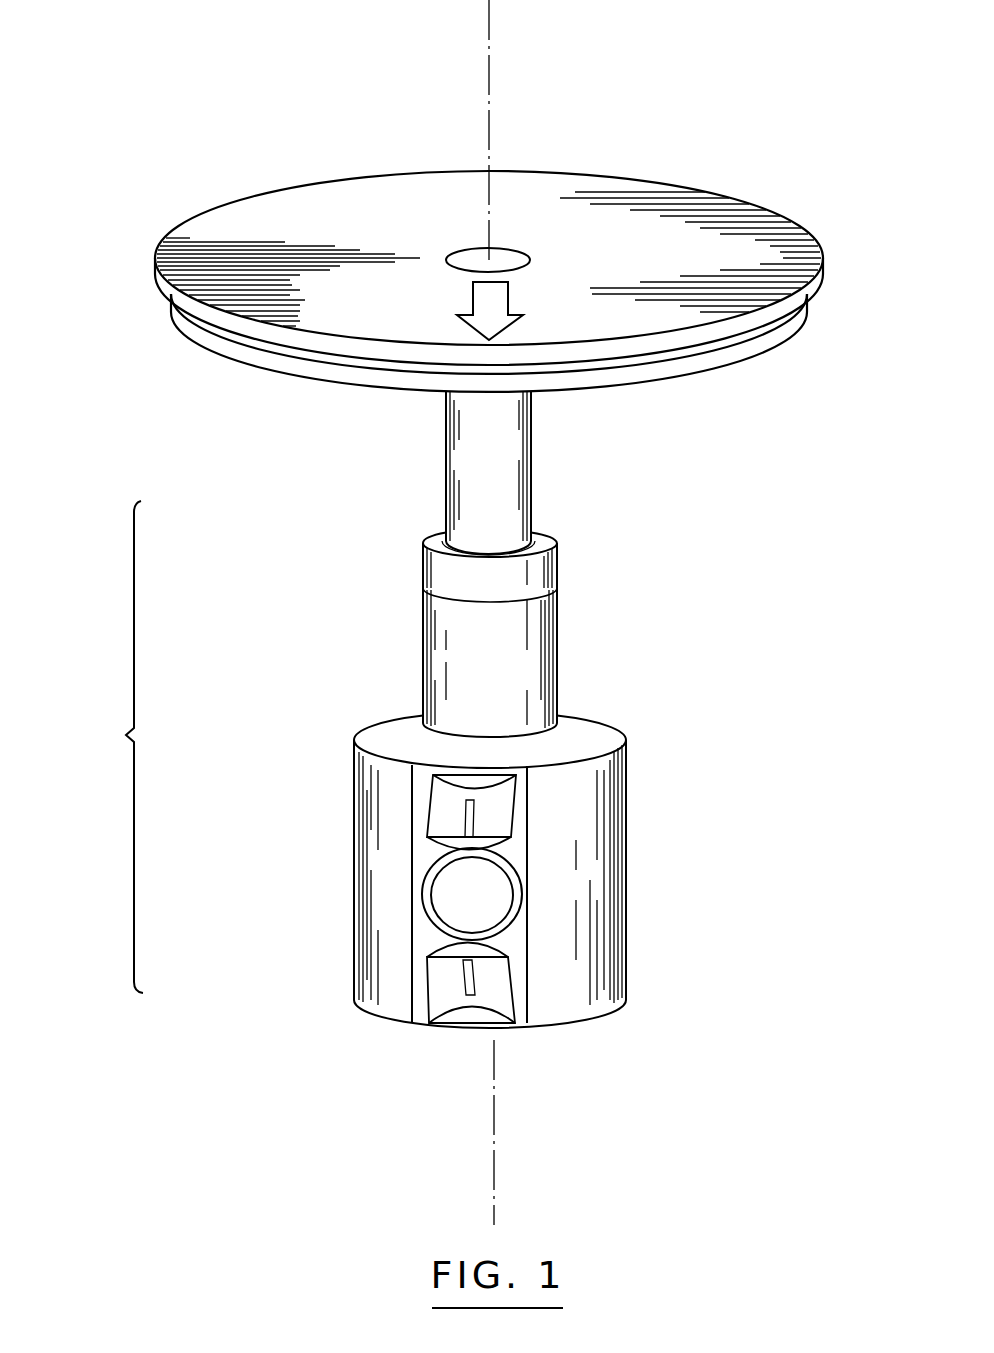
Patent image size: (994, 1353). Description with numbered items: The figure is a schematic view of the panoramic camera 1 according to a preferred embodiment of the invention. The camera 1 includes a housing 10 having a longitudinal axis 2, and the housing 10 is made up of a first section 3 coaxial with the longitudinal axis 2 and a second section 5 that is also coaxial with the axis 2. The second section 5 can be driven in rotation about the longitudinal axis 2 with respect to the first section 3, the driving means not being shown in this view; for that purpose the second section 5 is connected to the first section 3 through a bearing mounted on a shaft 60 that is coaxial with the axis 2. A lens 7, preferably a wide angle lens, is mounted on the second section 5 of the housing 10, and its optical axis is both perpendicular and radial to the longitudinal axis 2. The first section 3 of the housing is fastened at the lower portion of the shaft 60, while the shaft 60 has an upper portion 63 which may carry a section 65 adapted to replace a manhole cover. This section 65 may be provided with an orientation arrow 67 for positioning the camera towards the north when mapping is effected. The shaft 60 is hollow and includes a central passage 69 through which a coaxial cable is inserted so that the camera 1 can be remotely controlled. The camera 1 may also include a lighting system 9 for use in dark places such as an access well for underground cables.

The panoramic camera 1 is at (104, 747).
The longitudinal axis 2 is at (496, 65).
The first section 3 is at (557, 560).
The second section 5 is at (627, 840).
The lens 7 is at (425, 903).
The lighting system 9 is at (430, 760).
The housing 10 is at (568, 675).
The shaft 60 is at (419, 473).
The upper portion 63 is at (446, 397).
The section 65 is at (218, 225).
The orientation arrow 67 is at (500, 322).
The central passage 69 is at (482, 255).